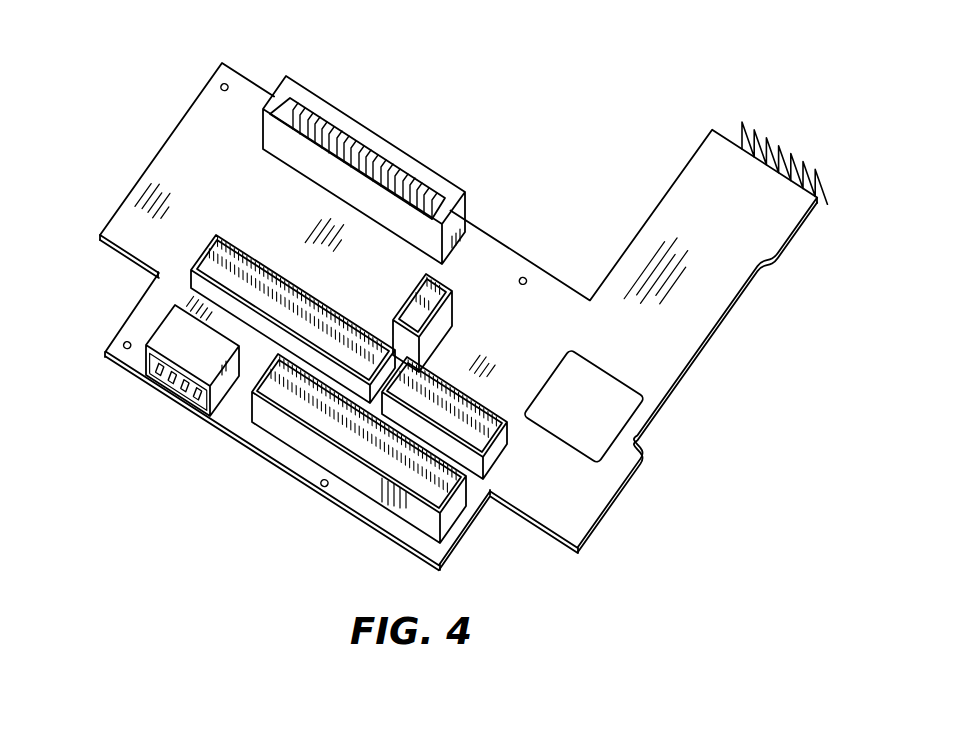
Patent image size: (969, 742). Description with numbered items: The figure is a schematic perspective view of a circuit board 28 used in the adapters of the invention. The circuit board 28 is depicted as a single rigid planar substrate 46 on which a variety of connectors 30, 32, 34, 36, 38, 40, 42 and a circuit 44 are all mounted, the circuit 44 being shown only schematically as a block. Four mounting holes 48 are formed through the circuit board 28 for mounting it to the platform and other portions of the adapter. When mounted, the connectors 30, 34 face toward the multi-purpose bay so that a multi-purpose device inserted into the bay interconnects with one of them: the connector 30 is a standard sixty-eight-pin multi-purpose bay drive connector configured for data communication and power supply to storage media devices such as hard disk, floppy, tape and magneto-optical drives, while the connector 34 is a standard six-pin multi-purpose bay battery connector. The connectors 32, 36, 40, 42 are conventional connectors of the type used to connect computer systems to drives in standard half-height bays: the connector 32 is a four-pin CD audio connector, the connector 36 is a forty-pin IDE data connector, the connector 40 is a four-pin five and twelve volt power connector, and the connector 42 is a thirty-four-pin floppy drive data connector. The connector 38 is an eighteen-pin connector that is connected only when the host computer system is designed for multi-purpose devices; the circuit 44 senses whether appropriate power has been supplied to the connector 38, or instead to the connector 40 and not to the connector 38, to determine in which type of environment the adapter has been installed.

The circuit board 28 is at (740, 293).
The connector 30 is at (316, 94).
The connector 32 is at (455, 306).
The connector 34 is at (773, 152).
The connector 36 is at (226, 236).
The connector 38 is at (513, 438).
The connector 40 is at (152, 332).
The connector 42 is at (478, 495).
The circuit 44 is at (636, 447).
The rigid planar substrate 46 is at (116, 212).
The mounting holes 48 is at (218, 88).